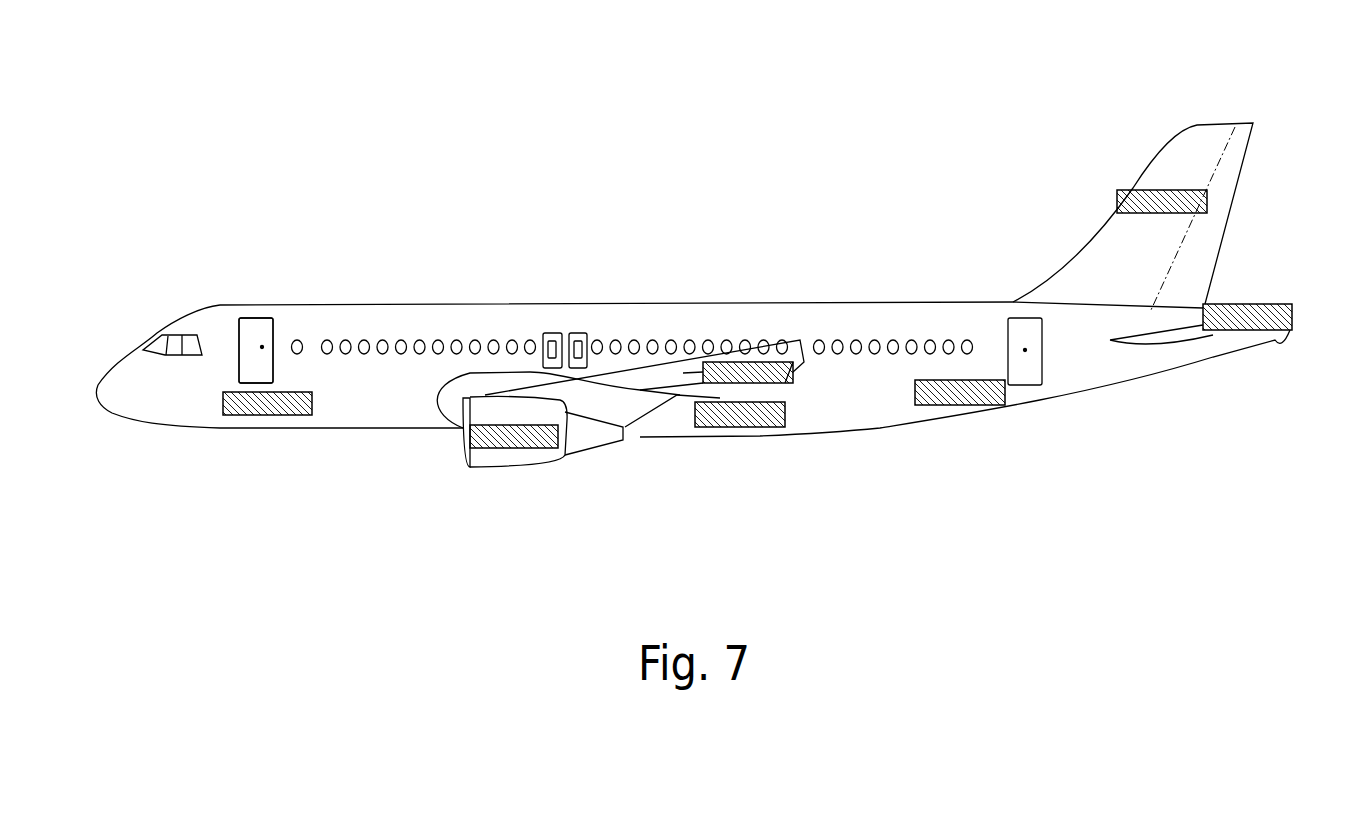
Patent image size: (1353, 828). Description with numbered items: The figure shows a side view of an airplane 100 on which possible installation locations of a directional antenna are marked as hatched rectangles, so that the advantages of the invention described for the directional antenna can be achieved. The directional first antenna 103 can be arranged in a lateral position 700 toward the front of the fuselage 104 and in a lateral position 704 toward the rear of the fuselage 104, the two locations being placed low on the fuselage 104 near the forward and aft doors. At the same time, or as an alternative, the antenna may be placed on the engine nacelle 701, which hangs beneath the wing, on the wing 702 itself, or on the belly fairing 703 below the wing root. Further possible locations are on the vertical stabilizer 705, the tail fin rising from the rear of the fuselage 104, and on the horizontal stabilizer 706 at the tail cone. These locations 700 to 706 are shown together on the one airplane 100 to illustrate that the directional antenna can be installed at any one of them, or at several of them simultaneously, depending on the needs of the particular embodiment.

The aircraft 100 is at (537, 276).
The directional first antenna 103 is at (295, 392).
The fuselage 104 is at (383, 405).
The lateral position 700 is at (266, 415).
The engine nacelle 701 is at (500, 447).
The wing 702 is at (782, 385).
The belly fairing 703 is at (722, 428).
The lateral position 704 is at (960, 407).
The vertical stabilizer 705 is at (1157, 190).
The horizontal stabilizer 706 is at (1245, 305).